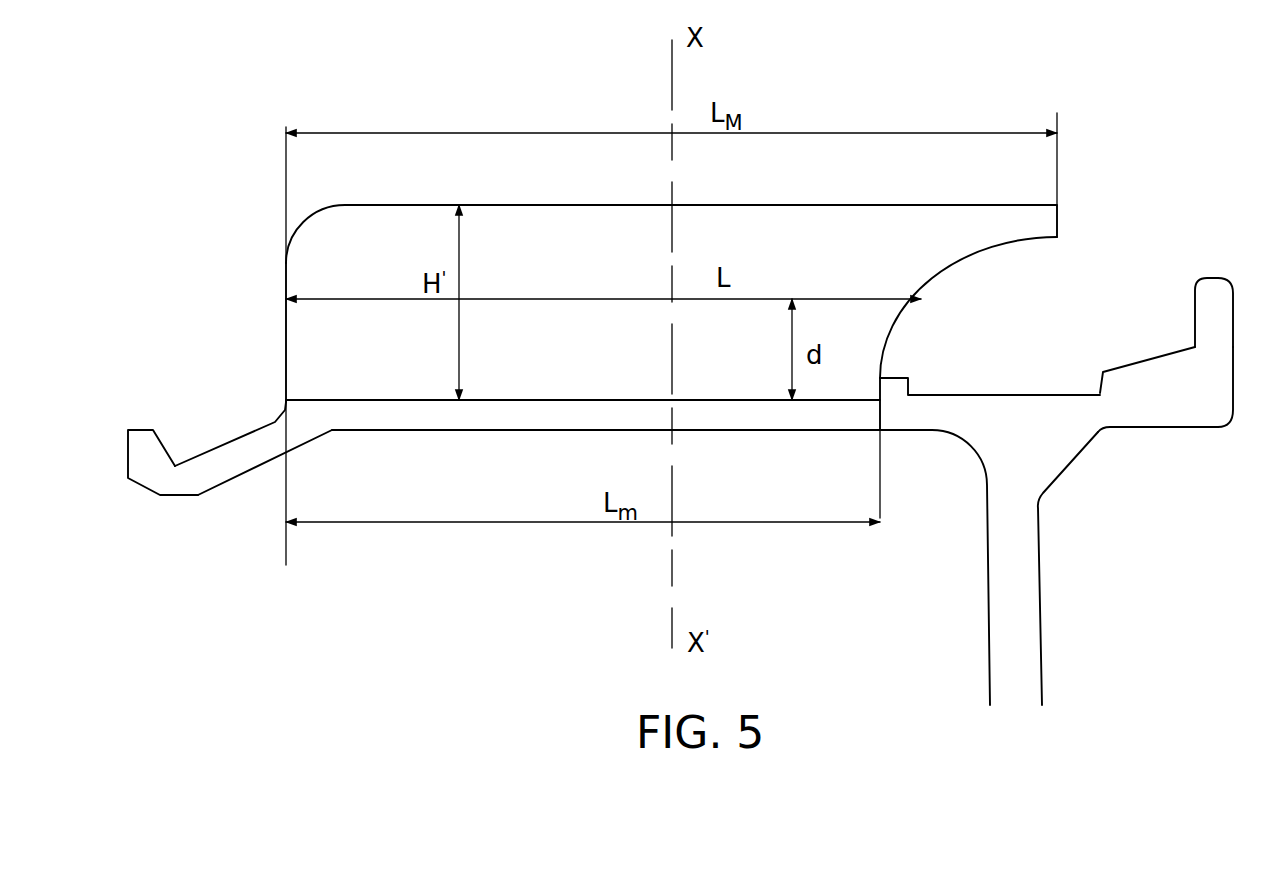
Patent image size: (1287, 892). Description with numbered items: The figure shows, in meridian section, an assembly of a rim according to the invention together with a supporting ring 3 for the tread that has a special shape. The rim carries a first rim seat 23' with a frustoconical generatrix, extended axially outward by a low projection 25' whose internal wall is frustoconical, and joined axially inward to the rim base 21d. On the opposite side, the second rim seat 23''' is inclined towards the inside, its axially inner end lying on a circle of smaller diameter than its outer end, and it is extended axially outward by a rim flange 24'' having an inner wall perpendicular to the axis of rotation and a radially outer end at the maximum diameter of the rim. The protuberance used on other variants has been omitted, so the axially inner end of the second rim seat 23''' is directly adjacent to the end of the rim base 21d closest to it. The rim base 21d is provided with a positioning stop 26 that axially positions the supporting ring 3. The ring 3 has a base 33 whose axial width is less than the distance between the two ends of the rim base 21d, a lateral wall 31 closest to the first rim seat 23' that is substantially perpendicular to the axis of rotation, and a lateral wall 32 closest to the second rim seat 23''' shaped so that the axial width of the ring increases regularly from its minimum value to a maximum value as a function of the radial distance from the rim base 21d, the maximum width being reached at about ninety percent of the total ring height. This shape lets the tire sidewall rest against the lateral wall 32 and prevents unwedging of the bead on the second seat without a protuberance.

The supporting ring 3 is at (582, 286).
The rim base 21d is at (494, 415).
The first rim seat 23' is at (253, 387).
The second rim seat 23''' is at (1165, 341).
The rim flange 24'' is at (1207, 269).
The projection 25' is at (161, 423).
The positioning stop 26 is at (897, 388).
The lateral wall 31 is at (287, 336).
The lateral wall 32 is at (937, 282).
The base 33 is at (615, 399).